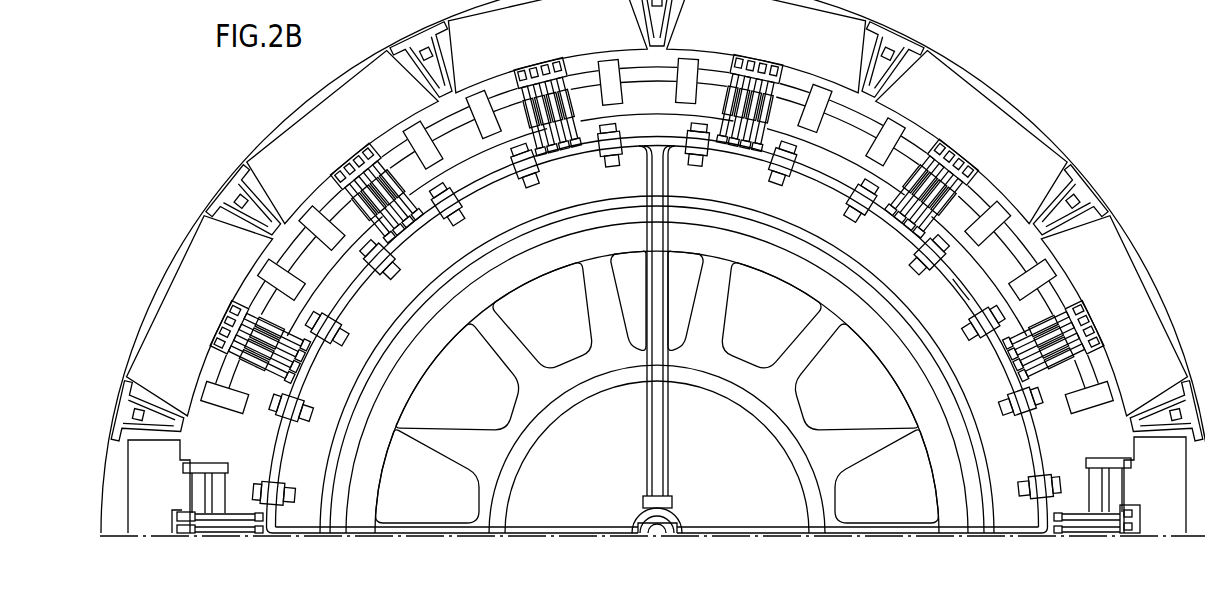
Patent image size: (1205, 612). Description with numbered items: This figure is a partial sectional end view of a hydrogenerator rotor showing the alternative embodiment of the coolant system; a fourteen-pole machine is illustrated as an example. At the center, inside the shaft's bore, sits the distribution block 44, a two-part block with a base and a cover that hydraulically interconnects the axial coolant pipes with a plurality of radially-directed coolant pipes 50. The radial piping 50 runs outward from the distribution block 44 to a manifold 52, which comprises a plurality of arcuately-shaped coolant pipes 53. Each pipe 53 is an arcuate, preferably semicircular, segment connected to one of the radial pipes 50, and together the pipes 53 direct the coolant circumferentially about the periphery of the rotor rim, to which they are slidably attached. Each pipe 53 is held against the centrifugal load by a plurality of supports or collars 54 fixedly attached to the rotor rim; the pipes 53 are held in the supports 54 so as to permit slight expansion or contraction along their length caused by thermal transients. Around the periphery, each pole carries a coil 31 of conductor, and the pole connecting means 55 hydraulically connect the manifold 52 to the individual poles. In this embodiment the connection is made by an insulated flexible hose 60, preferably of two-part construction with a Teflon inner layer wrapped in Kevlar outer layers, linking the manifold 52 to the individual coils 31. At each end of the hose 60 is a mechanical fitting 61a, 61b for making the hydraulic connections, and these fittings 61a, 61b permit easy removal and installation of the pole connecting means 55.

The coil 31 is at (247, 161).
The distribution block 44 is at (657, 537).
The radially-directed coolant pipes 50 is at (662, 442).
The manifold 52 is at (811, 178).
The arcuately-shaped coolant pipes 53 is at (967, 296).
The supports or collars 54 is at (527, 172).
The pole connecting means 55 is at (416, 178).
The insulated flexible hose 60 is at (583, 118).
The mechanical fitting 61a is at (1125, 530).
The mechanical fitting 61b is at (1062, 530).